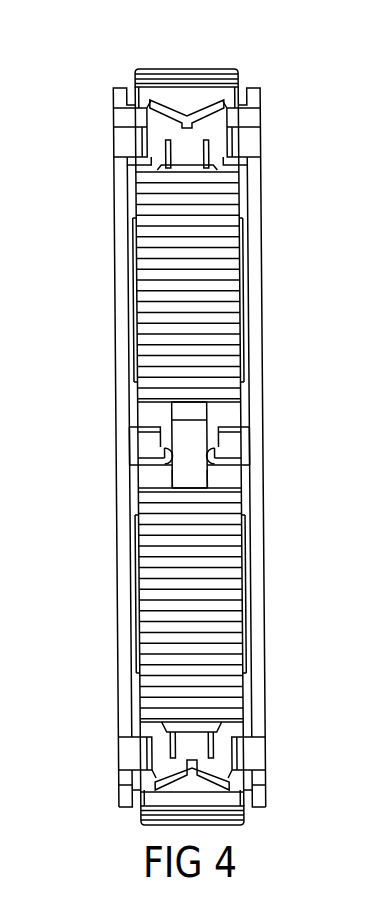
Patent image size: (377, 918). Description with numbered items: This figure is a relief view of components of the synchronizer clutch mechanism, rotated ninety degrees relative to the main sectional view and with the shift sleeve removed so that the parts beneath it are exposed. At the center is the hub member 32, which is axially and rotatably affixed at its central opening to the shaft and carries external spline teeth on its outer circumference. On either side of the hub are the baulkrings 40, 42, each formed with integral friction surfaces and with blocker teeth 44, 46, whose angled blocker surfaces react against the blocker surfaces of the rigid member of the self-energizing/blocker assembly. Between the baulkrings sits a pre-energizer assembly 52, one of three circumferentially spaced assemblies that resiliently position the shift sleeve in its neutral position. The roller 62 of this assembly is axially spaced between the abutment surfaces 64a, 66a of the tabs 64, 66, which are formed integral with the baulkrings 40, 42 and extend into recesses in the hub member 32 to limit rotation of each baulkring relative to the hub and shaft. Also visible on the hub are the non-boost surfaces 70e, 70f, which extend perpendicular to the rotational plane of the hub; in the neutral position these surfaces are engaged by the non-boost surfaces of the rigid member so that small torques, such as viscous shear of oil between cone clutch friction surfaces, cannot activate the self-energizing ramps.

The hub member 32 is at (253, 71).
The baulkring 40 is at (104, 304).
The baulkring 42 is at (273, 311).
The blocker teeth set 44 is at (123, 142).
The blocker teeth set 46 is at (250, 140).
The pre-energizer assembly 52 is at (222, 421).
The roller 62 is at (188, 467).
The tab 64 is at (145, 448).
The abutment surface 64a is at (170, 464).
The tab 66 is at (234, 448).
The abutment surface 66a is at (201, 455).
The non-boost surface 70e is at (186, 126).
The non-boost surface 70f is at (206, 770).